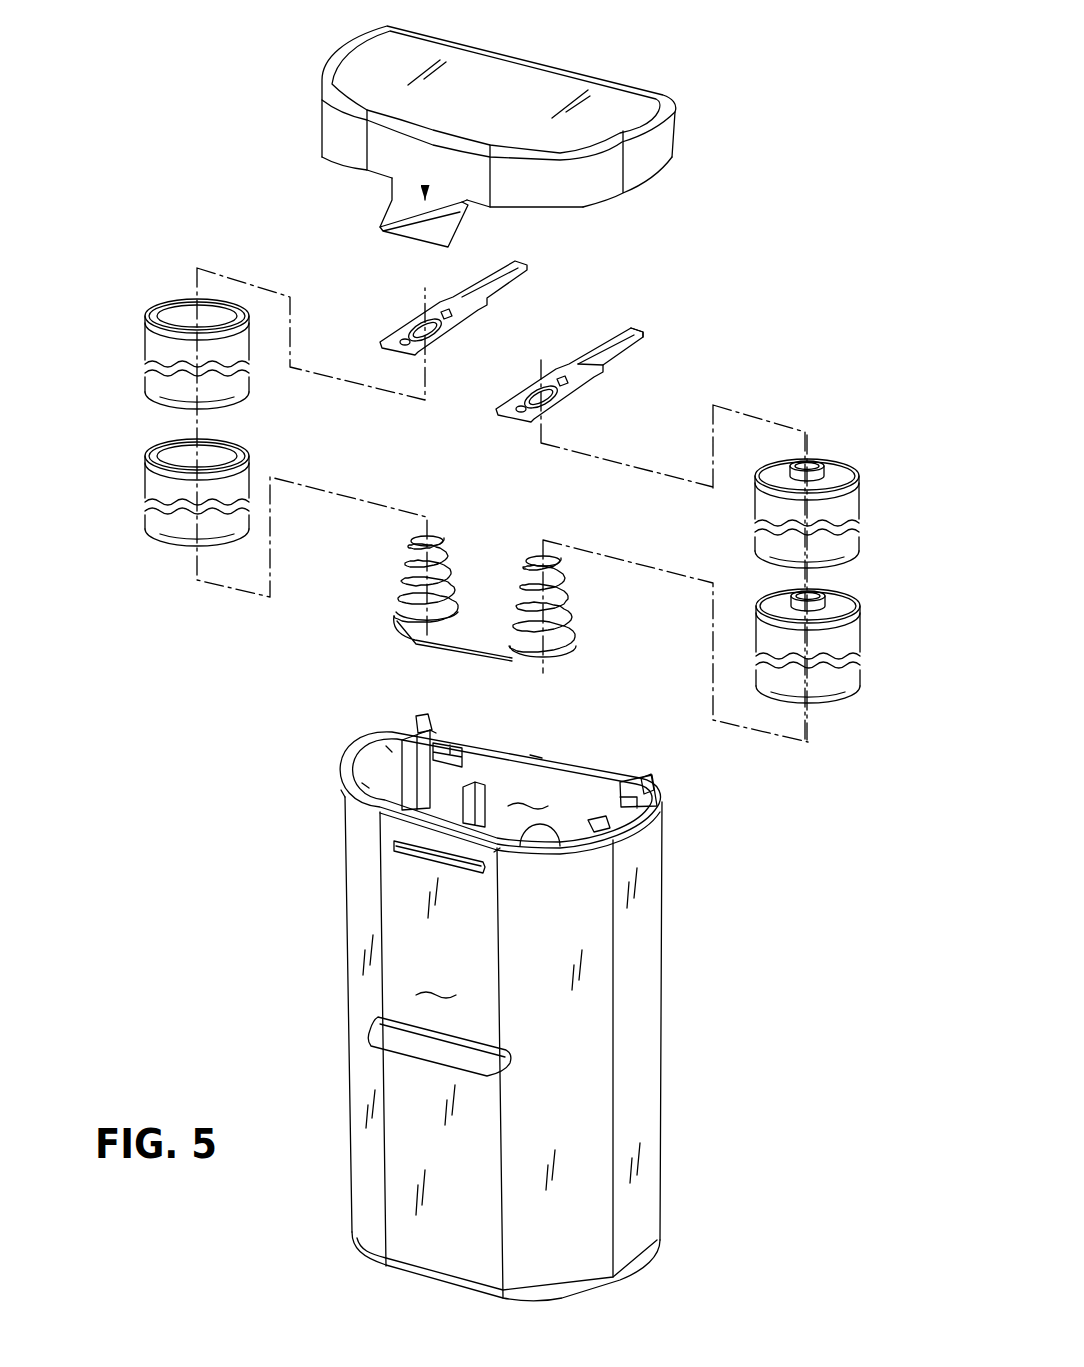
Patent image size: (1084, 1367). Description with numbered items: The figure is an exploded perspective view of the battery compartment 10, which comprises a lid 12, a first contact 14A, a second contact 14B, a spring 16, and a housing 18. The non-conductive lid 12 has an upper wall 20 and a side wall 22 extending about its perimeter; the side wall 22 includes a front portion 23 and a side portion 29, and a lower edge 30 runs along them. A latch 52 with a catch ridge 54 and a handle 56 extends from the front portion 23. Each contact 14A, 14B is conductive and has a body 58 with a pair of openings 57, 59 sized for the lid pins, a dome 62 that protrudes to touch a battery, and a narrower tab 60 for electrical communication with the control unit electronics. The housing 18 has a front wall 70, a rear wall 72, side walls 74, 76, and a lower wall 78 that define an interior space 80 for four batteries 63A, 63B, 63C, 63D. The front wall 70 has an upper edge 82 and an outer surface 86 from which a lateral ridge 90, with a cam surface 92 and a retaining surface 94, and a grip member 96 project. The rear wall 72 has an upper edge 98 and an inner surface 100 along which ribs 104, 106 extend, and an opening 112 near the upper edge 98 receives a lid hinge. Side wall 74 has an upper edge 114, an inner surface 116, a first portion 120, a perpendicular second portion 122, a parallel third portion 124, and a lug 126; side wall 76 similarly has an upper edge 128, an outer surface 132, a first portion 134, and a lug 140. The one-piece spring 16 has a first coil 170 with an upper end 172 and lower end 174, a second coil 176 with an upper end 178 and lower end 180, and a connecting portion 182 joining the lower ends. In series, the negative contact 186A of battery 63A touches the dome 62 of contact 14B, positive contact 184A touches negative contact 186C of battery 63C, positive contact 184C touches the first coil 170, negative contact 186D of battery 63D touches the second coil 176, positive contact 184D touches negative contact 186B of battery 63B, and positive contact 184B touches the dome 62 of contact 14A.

The battery compartment 10 is at (178, 123).
The lid 12 is at (742, 75).
The first contact 14A is at (652, 330).
The second contact 14B is at (528, 283).
The spring 16 is at (604, 618).
The housing 18 is at (686, 1215).
The upper wall 20 is at (540, 98).
The side wall 22 is at (670, 140).
The front portion 23 is at (378, 150).
The side portion 29 is at (650, 165).
The lower edge 30 is at (600, 205).
The latch 52 is at (357, 218).
The catch ridge 54 is at (460, 210).
The handle 56 is at (410, 222).
The opening 57 is at (520, 392).
The body 58 is at (588, 400).
The opening 59 is at (552, 375).
The tab 60 is at (648, 342).
The dome 62 is at (550, 400).
The battery 63A is at (145, 348).
The battery 63B is at (866, 502).
The battery 63C is at (145, 513).
The battery 63D is at (865, 668).
The front wall 70 is at (415, 1136).
The rear wall 72 is at (578, 740).
The side wall 74 is at (336, 970).
The side wall 76 is at (652, 1114).
The lower wall 78 is at (418, 1273).
The interior space 80 is at (590, 793).
The upper edge 82 is at (540, 832).
The outer surface 86 is at (499, 1073).
The ridge 90 is at (385, 840).
The cam surface 92 is at (433, 853).
The retaining surface 94 is at (470, 876).
The grip member 96 is at (370, 1040).
The upper edge 98 is at (536, 757).
The inner surface 100 is at (529, 789).
The rib 104 is at (632, 806).
The rib 106 is at (470, 787).
The opening 112 is at (453, 741).
The upper edge 114 is at (350, 747).
The inner surface 116 is at (365, 778).
The first portion 120 is at (388, 750).
The second portion 122 is at (402, 767).
The third portion 124 is at (435, 730).
The lug 126 is at (425, 716).
The upper edge 128 is at (658, 806).
The outer surface 132 is at (640, 1022).
The first portion 134 is at (655, 917).
The lug 140 is at (655, 778).
The first coil 170 is at (396, 554).
The upper end 172 is at (438, 540).
The lower end 174 is at (393, 612).
The second coil 176 is at (578, 590).
The upper end 178 is at (549, 556).
The lower end 180 is at (555, 648).
The connecting portion 182 is at (456, 637).
The positive contact 184A is at (218, 412).
The positive contact 184B is at (813, 460).
The positive contact 184C is at (185, 548).
The positive contact 184D is at (790, 592).
The negative contact 186A is at (178, 312).
The negative contact 186B is at (840, 562).
The negative contact 186C is at (222, 447).
The negative contact 186D is at (833, 705).